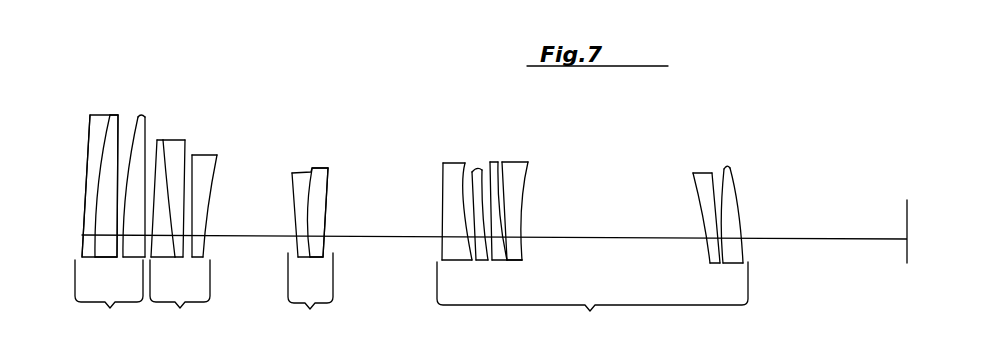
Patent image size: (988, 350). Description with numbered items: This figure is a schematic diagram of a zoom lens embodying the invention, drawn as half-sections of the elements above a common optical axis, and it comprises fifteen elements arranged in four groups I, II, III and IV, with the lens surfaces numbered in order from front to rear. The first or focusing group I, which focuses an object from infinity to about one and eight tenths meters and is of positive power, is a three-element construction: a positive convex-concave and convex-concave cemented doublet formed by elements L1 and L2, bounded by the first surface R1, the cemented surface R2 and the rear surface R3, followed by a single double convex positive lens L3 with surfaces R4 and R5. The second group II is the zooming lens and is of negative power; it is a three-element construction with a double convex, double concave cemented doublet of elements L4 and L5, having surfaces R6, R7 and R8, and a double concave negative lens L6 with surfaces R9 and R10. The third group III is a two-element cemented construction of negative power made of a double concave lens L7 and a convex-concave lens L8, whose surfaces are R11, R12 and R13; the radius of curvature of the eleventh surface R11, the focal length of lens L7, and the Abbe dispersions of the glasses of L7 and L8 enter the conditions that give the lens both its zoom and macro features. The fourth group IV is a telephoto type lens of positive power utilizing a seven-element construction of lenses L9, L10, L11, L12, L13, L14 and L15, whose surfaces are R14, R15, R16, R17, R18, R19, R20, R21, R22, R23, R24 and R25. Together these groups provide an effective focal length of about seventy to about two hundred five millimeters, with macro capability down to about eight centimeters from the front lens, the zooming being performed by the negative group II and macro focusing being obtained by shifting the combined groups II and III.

The first or focusing group I is at (109, 297).
The second group or zoom lens II is at (180, 297).
The third group III is at (310, 294).
The fourth group IV is at (592, 300).
The lens element L1 is at (83, 186).
The lens element L2 is at (86, 201).
The lens element L3 is at (125, 179).
The lens element L4 is at (173, 193).
The lens element L5 is at (194, 193).
The lens element L6 is at (227, 196).
The lens element L7 is at (321, 214).
The lens element L8 is at (321, 247).
The lens element L9 is at (437, 215).
The lens element L10 is at (451, 210).
The lens element L11 is at (514, 205).
The lens element L12 is at (545, 224).
The lens element L13 is at (527, 252).
The lens element L14 is at (686, 217).
The lens element L15 is at (751, 221).
The lens surface R1 is at (83, 192).
The lens surface R2 is at (93, 161).
The lens surface R3 is at (120, 150).
The lens surface R4 is at (137, 126).
The lens surface R5 is at (143, 118).
The lens surface R6 is at (155, 138).
The lens surface R7 is at (166, 146).
The lens surface R8 is at (188, 140).
The lens surface R9 is at (193, 162).
The lens surface R10 is at (207, 205).
The lens surface R11 is at (296, 200).
The lens surface R12 is at (312, 170).
The lens surface R13 is at (327, 199).
The lens surface R14 is at (443, 215).
The lens surface R15 is at (458, 182).
The lens surface R16 is at (446, 165).
The lens surface R17 is at (477, 168).
The lens surface R18 is at (498, 160).
The lens surface R19 is at (509, 172).
The lens surface R20 is at (519, 202).
The lens surface R21 is at (527, 214).
The lens surface R22 is at (706, 210).
The lens surface R23 is at (713, 184).
The lens surface R24 is at (725, 176).
The lens surface R25 is at (743, 203).